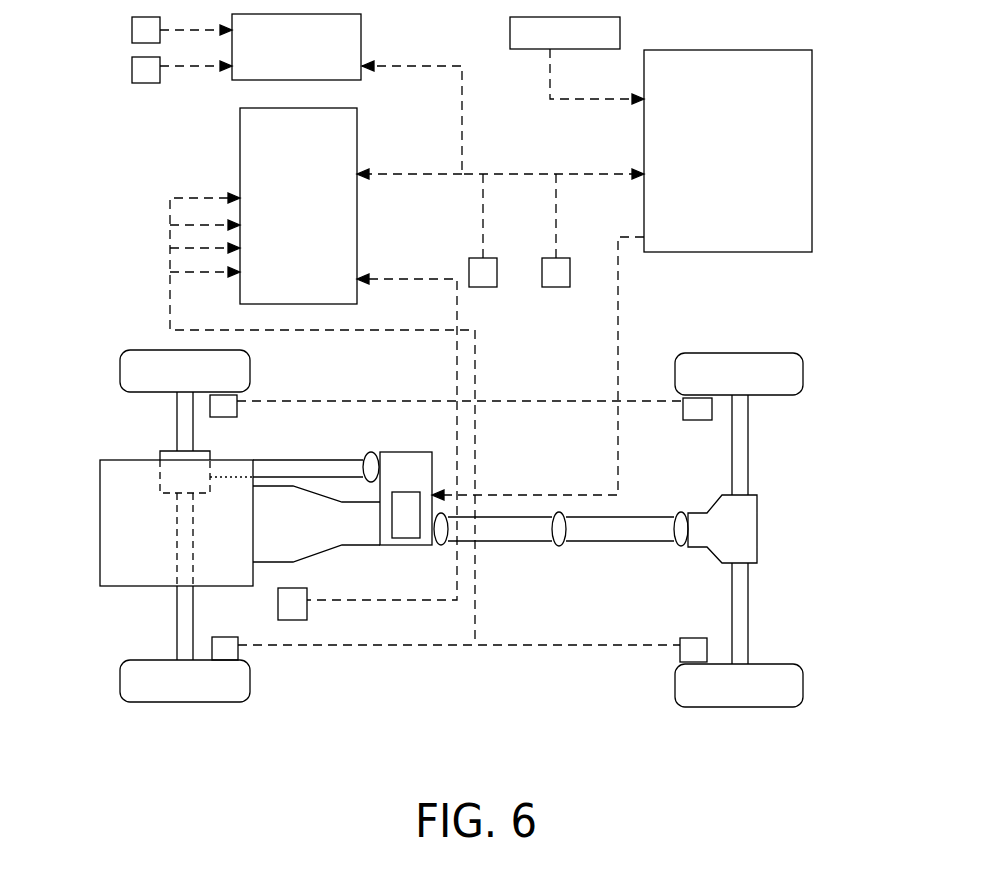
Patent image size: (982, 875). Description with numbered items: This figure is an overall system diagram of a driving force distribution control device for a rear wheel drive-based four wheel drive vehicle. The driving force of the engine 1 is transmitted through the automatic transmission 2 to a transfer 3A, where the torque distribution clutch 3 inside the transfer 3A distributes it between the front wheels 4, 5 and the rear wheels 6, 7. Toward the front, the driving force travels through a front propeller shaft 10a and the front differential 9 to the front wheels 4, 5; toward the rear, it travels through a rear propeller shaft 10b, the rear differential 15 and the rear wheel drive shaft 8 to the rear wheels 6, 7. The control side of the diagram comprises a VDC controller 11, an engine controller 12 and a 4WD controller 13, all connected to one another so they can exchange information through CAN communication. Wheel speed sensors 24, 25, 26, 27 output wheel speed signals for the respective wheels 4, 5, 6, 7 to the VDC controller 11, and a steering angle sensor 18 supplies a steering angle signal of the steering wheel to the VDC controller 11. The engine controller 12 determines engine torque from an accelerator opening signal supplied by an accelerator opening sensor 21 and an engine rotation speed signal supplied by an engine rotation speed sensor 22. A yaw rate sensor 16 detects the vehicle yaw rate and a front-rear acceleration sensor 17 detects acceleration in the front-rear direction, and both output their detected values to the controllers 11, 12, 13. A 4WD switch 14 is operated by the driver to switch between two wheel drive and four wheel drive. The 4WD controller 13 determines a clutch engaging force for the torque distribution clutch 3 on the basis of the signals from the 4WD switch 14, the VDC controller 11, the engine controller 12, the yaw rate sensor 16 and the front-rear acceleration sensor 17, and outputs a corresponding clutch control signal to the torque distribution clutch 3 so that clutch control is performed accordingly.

The engine 1 is at (100, 538).
The automatic transmission 2 is at (312, 557).
The torque distribution clutch 3 is at (400, 540).
The transfer 3A is at (390, 452).
The front wheel 4 is at (120, 371).
The front wheel 5 is at (120, 678).
The rear wheel 6 is at (803, 373).
The rear wheel 7 is at (803, 690).
The rear wheel drive shaft 8 is at (748, 455).
The front differential 9 is at (160, 455).
The front propeller shaft 10a is at (308, 457).
The rear propeller shaft 10b is at (497, 541).
The VDC controller 11 is at (357, 147).
The engine controller 12 is at (362, 40).
The 4WD controller 13 is at (812, 190).
The 4WD switch 14 is at (620, 32).
The rear differential 15 is at (757, 538).
The yaw rate sensor 16 is at (480, 287).
The front-rear acceleration sensor 17 is at (550, 287).
The steering angle sensor 18 is at (307, 602).
The accelerator opening sensor 21 is at (132, 33).
The engine rotation speed sensor 22 is at (132, 73).
The wheel speed sensor 24 is at (237, 407).
The wheel speed sensor 25 is at (238, 655).
The wheel speed sensor 26 is at (700, 420).
The wheel speed sensor 27 is at (680, 655).